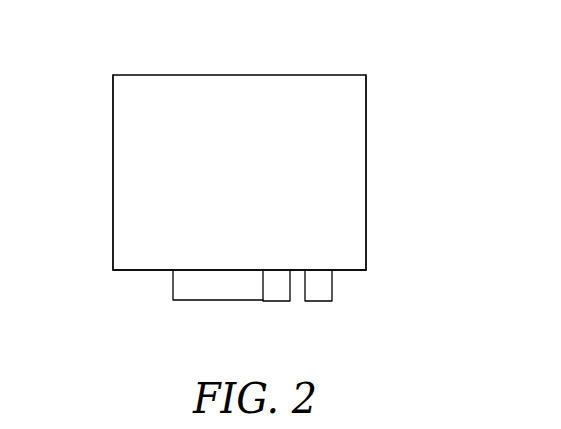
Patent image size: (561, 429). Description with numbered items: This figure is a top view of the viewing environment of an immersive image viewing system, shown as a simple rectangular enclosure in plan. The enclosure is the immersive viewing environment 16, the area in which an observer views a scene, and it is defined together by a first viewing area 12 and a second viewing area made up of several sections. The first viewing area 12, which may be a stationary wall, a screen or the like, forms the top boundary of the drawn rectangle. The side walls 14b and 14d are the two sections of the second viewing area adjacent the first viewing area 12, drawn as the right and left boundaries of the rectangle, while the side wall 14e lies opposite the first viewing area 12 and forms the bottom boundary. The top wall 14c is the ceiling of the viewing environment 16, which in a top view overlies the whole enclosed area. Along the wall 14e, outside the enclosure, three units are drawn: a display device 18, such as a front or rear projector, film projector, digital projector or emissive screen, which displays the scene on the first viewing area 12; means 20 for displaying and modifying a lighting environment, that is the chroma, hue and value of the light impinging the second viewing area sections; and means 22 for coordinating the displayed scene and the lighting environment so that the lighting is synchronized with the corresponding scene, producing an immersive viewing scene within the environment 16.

The first viewing area 12 is at (204, 75).
The side wall of second viewing area 14b is at (367, 140).
The top wall of viewing environment 14c is at (538, 421).
The side wall of second viewing area 14d is at (113, 138).
The side wall opposite first viewing area 14e is at (350, 271).
The immersive viewing environment 16 is at (157, 227).
The display device 18 is at (195, 285).
The means for displaying and modifying a lighting environment 20 is at (319, 288).
The means for coordinating 22 is at (278, 288).